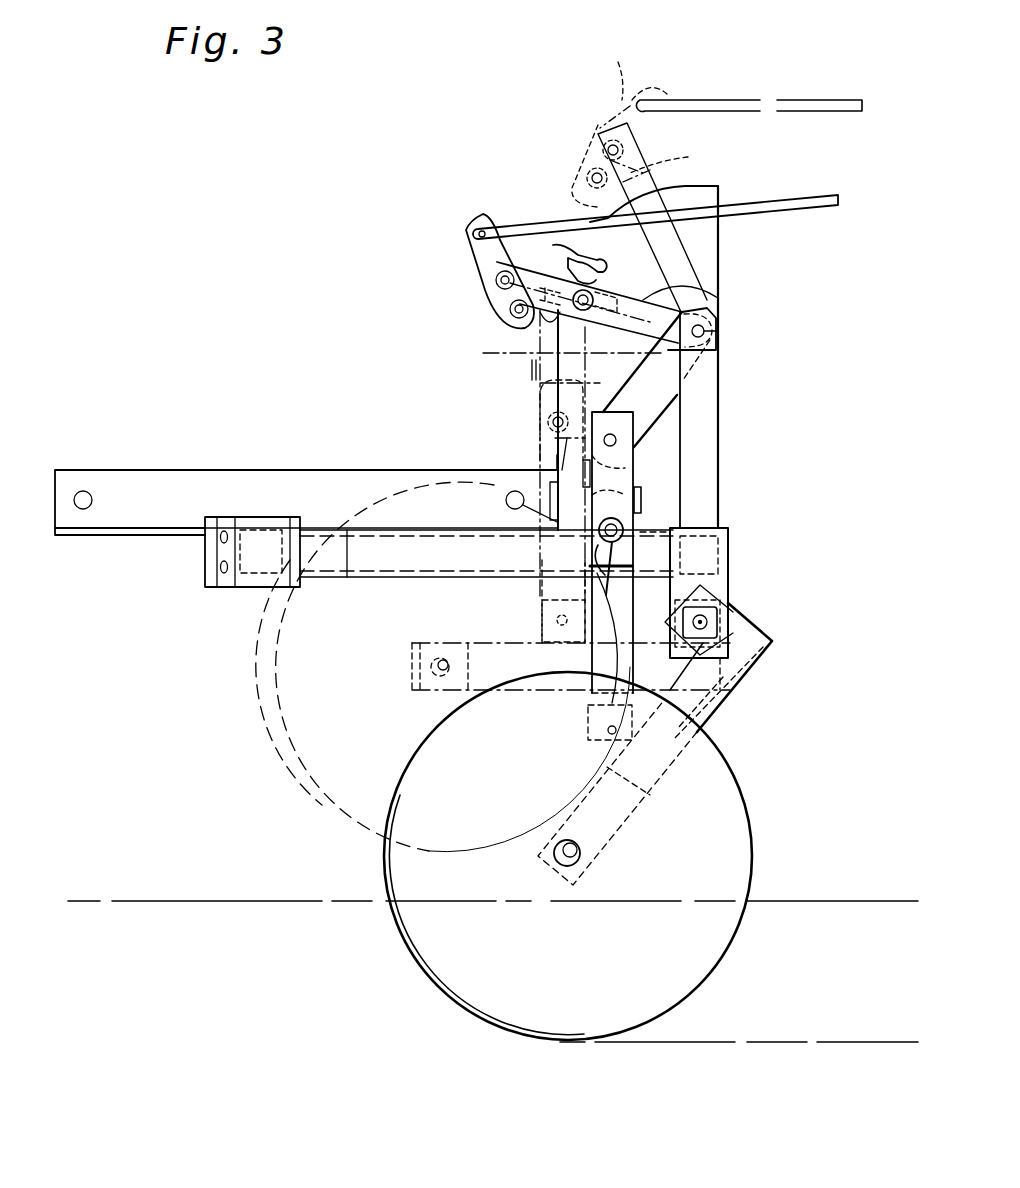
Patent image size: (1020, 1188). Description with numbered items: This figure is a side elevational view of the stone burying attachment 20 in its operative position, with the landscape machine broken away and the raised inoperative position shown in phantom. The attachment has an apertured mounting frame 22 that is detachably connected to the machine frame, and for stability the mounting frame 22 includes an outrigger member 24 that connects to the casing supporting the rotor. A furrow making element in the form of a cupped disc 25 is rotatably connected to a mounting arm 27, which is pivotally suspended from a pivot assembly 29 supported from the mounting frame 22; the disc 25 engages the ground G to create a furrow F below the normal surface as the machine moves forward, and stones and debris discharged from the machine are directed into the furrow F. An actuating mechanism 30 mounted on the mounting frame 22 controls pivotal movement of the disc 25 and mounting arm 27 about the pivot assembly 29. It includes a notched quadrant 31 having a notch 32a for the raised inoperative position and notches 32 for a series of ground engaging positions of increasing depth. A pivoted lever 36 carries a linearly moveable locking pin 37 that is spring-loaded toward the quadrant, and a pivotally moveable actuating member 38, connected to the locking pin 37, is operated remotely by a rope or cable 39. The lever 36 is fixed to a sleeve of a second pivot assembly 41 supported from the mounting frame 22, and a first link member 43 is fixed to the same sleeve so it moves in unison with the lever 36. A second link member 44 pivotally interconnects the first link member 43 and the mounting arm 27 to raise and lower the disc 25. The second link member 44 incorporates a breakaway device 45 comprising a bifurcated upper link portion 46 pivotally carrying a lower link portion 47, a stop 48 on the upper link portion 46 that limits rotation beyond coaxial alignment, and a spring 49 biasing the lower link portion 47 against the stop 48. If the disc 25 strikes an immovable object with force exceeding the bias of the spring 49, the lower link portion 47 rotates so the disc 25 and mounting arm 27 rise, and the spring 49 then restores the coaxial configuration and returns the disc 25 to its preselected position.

The stone burying attachment 20 is at (370, 242).
The mounting frame 22 is at (240, 470).
The outrigger member 24 is at (222, 588).
The furrow making element (disc) 25 is at (727, 808).
The mounting arm 27 is at (720, 712).
The pivot assembly 29 is at (707, 616).
The actuating mechanism 30 is at (515, 160).
The notched quadrant 31 is at (718, 262).
The notches 32 is at (580, 258).
The notch 32a is at (683, 159).
The pivoted lever 36 is at (638, 155).
The locking pin 37 is at (550, 352).
The actuating member 38 is at (423, 278).
The rope or cable 39 is at (826, 208).
The second pivot assembly 41 is at (718, 331).
The first link member 43 is at (657, 393).
The second link member 44 is at (550, 472).
The breakaway device 45 is at (655, 514).
The upper link portion 46 is at (633, 453).
The lower link portion 47 is at (622, 600).
The stop 48 is at (641, 492).
The spring 49 is at (640, 540).
The ground G is at (838, 901).
The furrow F is at (826, 1042).